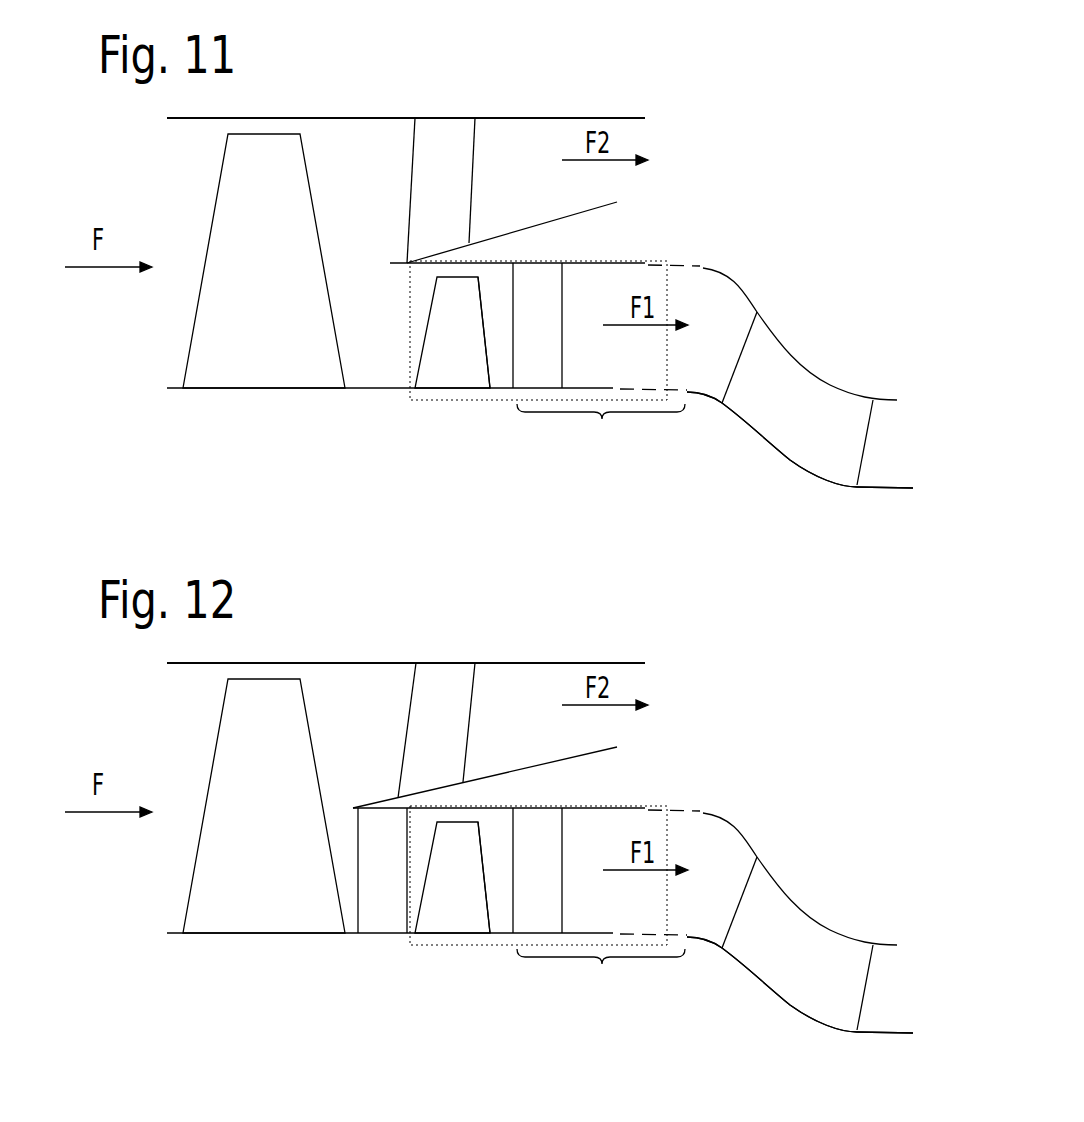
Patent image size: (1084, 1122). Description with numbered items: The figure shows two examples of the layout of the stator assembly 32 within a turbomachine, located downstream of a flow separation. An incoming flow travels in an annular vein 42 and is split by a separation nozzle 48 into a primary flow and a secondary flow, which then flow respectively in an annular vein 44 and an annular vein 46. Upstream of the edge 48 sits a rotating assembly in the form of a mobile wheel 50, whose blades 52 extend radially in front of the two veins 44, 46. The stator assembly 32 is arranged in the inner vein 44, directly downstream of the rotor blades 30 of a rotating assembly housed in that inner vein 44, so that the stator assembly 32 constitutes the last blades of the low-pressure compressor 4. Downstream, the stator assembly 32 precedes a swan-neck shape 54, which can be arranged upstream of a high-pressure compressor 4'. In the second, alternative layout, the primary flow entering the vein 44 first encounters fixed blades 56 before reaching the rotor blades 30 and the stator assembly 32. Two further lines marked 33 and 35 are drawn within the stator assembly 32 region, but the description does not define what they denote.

In FIG. 11, the low-pressure compressor 4 is at (441, 102).
In FIG. 12, the low-pressure compressor 4 is at (441, 647).
In FIG. 11, the high-pressure compressor 4' is at (810, 390).
In FIG. 12, the high-pressure compressor 4' is at (810, 935).
In FIG. 11, the rotor blades 30 is at (470, 370).
In FIG. 12, the rotor blades 30 is at (452, 877).
In FIG. 11, the stator assembly 32 is at (547, 359).
In FIG. 12, the stator assembly 32 is at (547, 904).
In FIG. 11, the first wall 33 is at (542, 293).
In FIG. 12, the first wall 33 is at (543, 850).
In FIG. 11, the second wall 35 is at (603, 300).
In FIG. 12, the second wall 35 is at (606, 846).
In FIG. 11, the annular vein 42 is at (365, 248).
In FIG. 12, the annular vein 42 is at (351, 777).
In FIG. 11, the annular vein 44 is at (500, 332).
In FIG. 12, the annular vein 44 is at (484, 917).
In FIG. 11, the annular vein 46 is at (542, 195).
In FIG. 12, the annular vein 46 is at (485, 735).
In FIG. 11, the separation nozzle 48 is at (391, 263).
In FIG. 12, the separation nozzle 48 is at (499, 752).
In FIG. 11, the mobile wheel 50 is at (319, 148).
In FIG. 12, the mobile wheel 50 is at (406, 647).
In FIG. 11, the blades 52 is at (280, 302).
In FIG. 12, the blades 52 is at (264, 806).
In FIG. 11, the swan-neck shape 54 is at (822, 350).
In FIG. 12, the swan-neck shape 54 is at (800, 921).
In FIG. 12, the fixed blades 56 is at (378, 910).